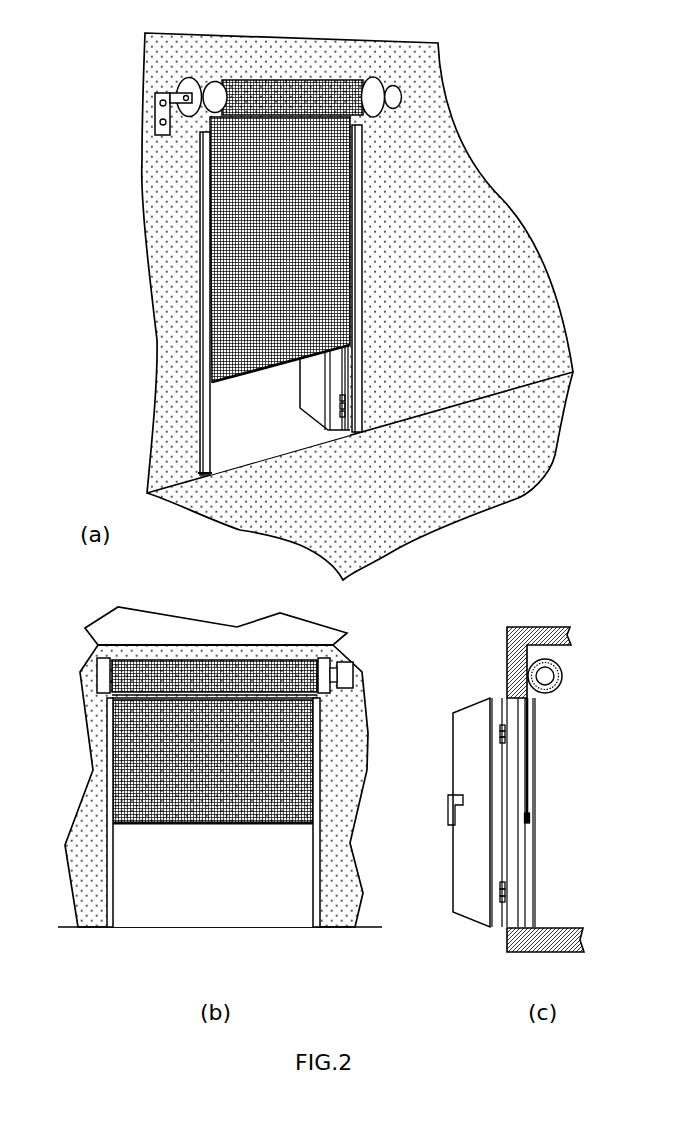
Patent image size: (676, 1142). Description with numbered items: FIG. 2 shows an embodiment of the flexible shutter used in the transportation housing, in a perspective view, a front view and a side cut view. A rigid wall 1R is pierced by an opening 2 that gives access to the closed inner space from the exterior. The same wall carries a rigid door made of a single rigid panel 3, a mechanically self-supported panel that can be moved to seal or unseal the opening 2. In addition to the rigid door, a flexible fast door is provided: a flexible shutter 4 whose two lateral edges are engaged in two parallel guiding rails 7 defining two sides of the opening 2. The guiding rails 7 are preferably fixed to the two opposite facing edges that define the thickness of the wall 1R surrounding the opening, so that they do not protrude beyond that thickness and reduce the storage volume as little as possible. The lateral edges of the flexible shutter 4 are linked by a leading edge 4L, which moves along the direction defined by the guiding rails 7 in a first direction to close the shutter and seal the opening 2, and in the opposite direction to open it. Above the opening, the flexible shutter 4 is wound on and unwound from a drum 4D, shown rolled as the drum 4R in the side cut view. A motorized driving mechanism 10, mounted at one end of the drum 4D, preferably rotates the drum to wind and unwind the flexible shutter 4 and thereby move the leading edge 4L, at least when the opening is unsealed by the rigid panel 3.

The wall 1R is at (457, 195).
The opening 2 is at (257, 437).
The rigid panel 3 is at (305, 402).
The flexible shutter 4 is at (262, 252).
The leading edge 4L is at (273, 370).
The drum 4D is at (330, 100).
The drum 4R is at (563, 677).
The guiding rail 7 is at (197, 178).
The motorized driving mechanism 10 is at (407, 103).